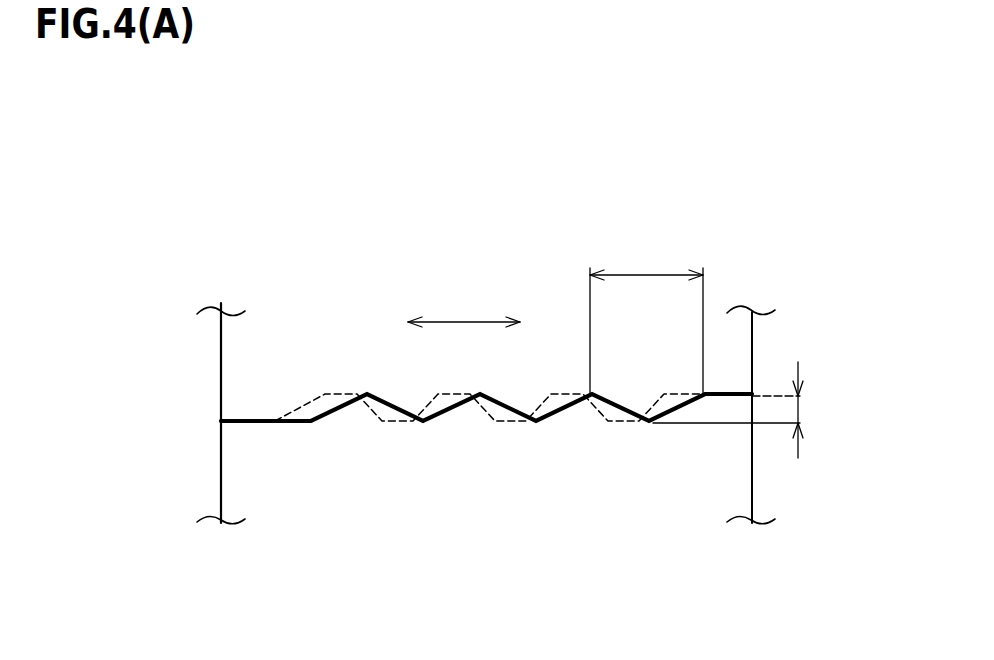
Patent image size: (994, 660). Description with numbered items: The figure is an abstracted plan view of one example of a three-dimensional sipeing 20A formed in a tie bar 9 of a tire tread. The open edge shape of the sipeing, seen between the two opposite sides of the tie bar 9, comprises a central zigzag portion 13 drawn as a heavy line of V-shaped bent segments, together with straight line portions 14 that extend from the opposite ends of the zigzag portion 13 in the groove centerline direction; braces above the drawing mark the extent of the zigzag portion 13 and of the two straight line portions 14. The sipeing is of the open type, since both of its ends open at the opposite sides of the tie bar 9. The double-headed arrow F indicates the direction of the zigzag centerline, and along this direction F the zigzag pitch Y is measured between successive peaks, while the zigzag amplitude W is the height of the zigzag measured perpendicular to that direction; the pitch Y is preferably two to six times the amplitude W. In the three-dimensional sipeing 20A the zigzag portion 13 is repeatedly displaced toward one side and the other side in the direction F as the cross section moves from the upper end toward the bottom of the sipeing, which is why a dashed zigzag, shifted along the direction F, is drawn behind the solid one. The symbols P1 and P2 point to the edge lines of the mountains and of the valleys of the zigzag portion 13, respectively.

The three-dimensional sipeing 20A is at (245, 418).
The tie bar 9 is at (752, 488).
The zigzag portion 13 is at (705, 196).
The straight line portions 14 is at (309, 196).
The zigzag centerline direction F is at (465, 322).
The zigzag pitch Y is at (646, 321).
The zigzag amplitude W is at (742, 410).
The edge lines of mountains P1 is at (312, 423).
The edge lines of valleys P2 is at (365, 396).